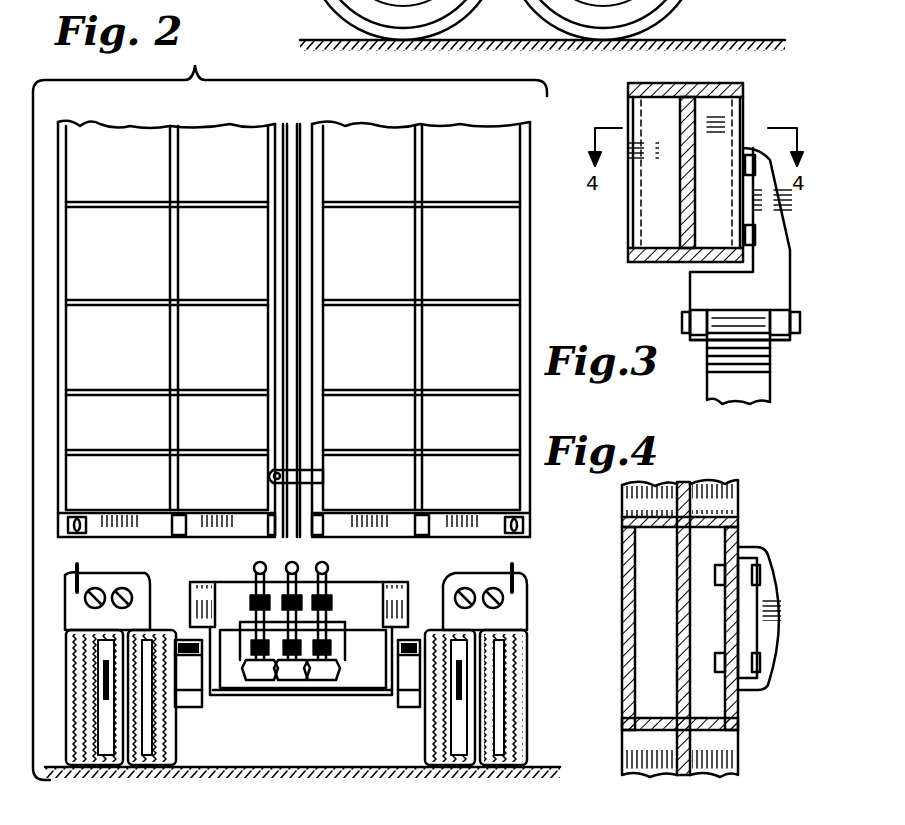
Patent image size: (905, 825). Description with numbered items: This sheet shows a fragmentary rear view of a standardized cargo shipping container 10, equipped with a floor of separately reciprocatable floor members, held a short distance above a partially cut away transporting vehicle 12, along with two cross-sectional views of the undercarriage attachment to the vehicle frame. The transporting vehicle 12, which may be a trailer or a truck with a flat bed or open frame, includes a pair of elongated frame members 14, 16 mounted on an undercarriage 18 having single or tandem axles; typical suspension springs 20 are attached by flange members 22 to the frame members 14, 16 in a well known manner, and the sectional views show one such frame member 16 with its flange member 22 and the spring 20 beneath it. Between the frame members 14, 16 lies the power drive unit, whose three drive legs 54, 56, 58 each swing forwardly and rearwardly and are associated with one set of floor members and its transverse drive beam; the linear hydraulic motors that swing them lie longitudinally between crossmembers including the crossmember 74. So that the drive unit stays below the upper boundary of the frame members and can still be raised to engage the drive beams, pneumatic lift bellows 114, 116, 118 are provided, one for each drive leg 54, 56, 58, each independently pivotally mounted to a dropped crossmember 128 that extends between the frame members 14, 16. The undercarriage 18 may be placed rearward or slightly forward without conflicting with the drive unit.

In FIG. 2, the cargo shipping container 10 is at (113, 112).
In FIG. 2, the transporting vehicle 12 is at (53, 598).
In FIG. 2, the elongated frame member 14 is at (202, 586).
In FIG. 2, the elongated frame member 16 is at (400, 622).
In FIG. 3, the elongated frame member 16 is at (727, 83).
In FIG. 4, the elongated frame member 16 is at (740, 495).
In FIG. 2, the undercarriage 18 is at (540, 662).
In FIG. 2, the suspension springs 20 is at (190, 707).
In FIG. 3, the suspension springs 20 is at (757, 390).
In FIG. 2, the flange members 22 is at (447, 585).
In FIG. 3, the flange members 22 is at (793, 265).
In FIG. 4, the flange members 22 is at (792, 618).
In FIG. 2, the drive leg 54 is at (250, 588).
In FIG. 2, the drive leg 56 is at (292, 562).
In FIG. 2, the drive leg 58 is at (328, 590).
In FIG. 2, the crossmember 74 is at (392, 586).
In FIG. 2, the pneumatic lift bellows 114 is at (258, 682).
In FIG. 2, the pneumatic lift bellows 116 is at (290, 684).
In FIG. 2, the pneumatic lift bellows 118 is at (330, 690).
In FIG. 2, the dropped crossmember 128 is at (300, 692).